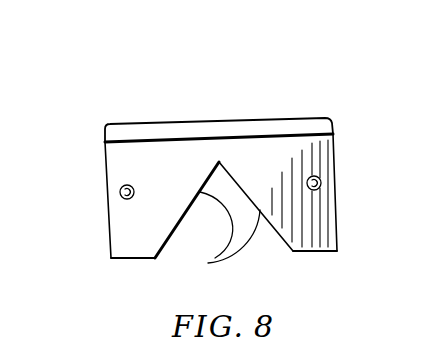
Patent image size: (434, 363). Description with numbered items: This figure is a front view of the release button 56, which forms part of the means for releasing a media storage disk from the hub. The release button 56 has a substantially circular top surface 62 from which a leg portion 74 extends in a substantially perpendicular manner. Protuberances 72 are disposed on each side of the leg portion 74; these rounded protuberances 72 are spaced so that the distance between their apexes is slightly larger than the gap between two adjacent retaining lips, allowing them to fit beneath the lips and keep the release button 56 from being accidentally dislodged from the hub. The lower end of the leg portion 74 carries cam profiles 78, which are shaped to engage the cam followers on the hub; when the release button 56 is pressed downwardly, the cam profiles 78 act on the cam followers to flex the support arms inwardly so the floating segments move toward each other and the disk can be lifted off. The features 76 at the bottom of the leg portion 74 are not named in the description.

The release button 56 is at (291, 97).
The top surface 62 is at (203, 120).
The protuberances 72 is at (120, 188).
The leg portion 74 is at (107, 218).
The feet 76 is at (132, 260).
The cam profiles 78 is at (208, 263).